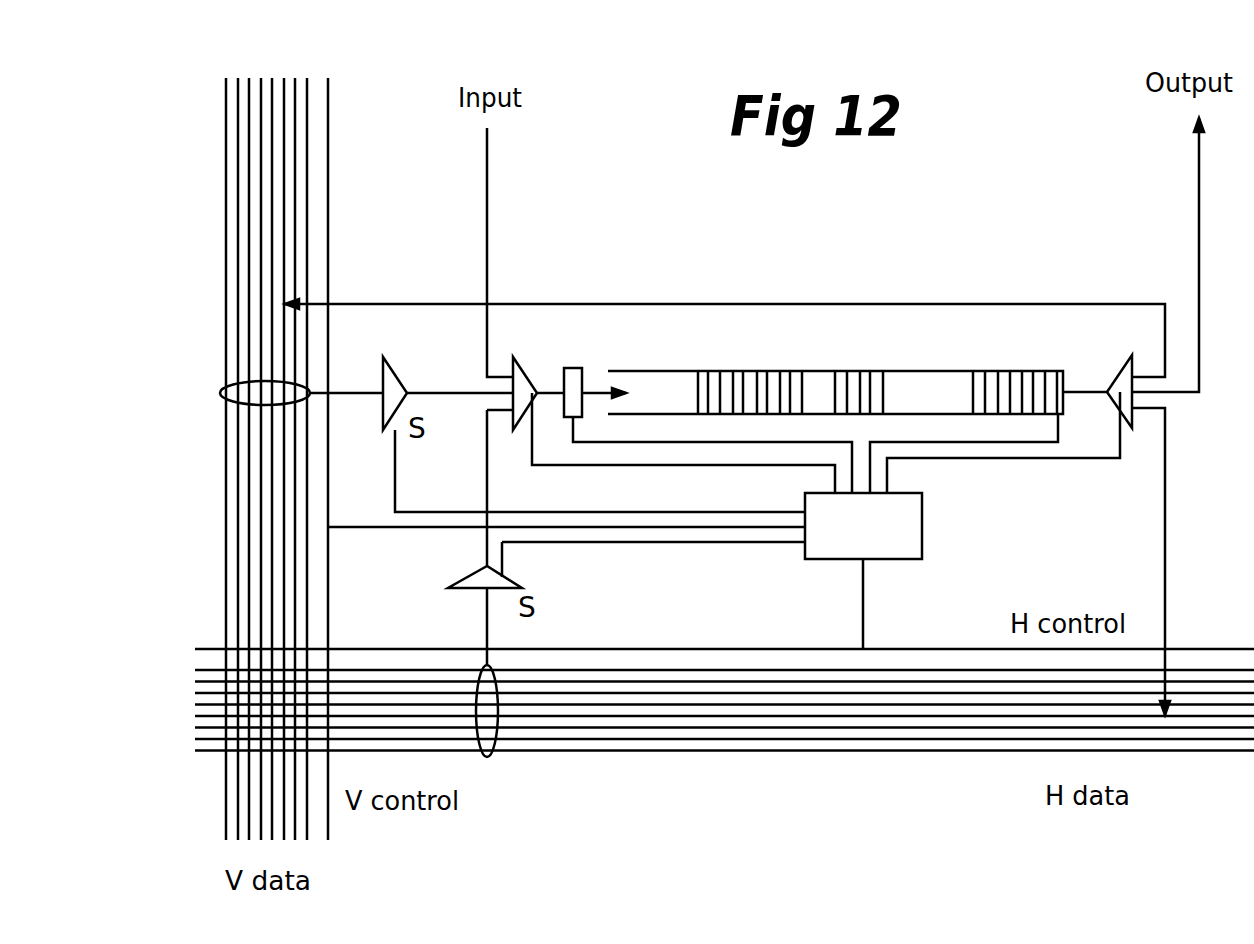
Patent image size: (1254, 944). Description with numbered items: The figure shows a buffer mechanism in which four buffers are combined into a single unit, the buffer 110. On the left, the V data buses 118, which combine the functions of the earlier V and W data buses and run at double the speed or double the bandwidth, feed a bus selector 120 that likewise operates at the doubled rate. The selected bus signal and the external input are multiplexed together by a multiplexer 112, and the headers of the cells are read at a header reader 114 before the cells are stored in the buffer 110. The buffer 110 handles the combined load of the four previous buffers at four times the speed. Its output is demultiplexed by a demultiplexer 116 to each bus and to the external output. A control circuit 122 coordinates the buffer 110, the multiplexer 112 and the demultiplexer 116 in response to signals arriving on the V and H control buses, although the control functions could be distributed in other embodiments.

The buffer 110 is at (823, 370).
The multiplexer 112 is at (523, 357).
The header reader 114 is at (575, 368).
The demultiplexer 116 is at (1115, 368).
The V data buses 118 is at (302, 782).
The bus selector 120 is at (393, 367).
The control circuit 122 is at (922, 532).